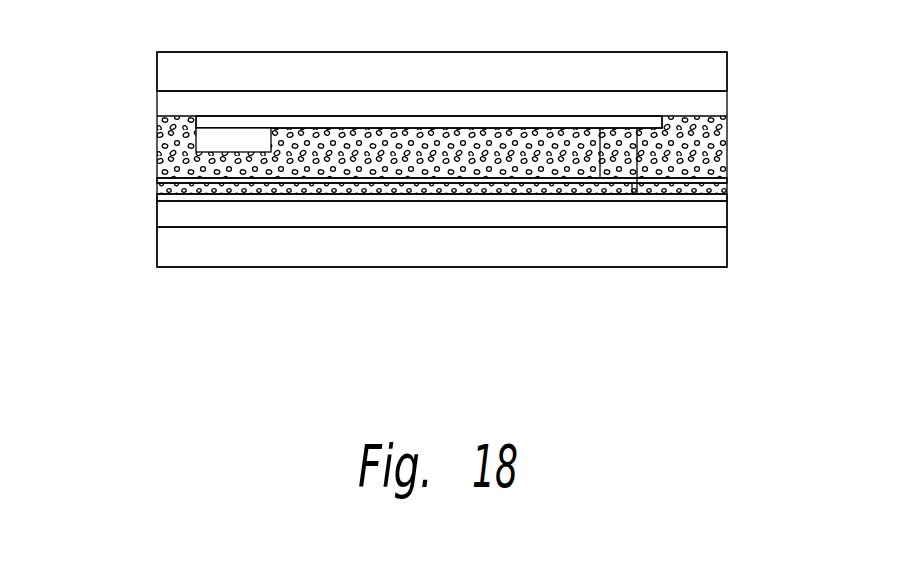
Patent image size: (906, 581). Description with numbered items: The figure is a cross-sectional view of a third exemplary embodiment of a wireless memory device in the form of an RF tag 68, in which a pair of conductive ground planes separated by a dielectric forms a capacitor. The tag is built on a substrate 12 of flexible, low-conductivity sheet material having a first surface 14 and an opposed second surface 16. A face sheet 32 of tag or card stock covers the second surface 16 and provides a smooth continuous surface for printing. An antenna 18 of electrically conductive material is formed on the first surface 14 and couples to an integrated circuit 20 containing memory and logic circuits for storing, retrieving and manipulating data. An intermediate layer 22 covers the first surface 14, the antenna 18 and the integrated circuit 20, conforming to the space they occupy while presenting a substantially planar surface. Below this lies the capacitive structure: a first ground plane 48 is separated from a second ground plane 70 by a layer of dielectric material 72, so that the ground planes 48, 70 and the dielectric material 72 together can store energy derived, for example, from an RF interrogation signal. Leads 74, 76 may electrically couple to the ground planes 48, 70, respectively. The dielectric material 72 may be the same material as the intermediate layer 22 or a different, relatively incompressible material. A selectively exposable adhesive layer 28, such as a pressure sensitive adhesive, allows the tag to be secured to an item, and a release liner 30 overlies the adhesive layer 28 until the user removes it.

The RF tag 68 is at (140, 74).
The face sheet 32 is at (728, 62).
The second surface 16 is at (707, 78).
The substrate 12 is at (728, 105).
The first surface 14 is at (703, 117).
The antenna 18 is at (670, 120).
The integrated circuit 20 is at (190, 149).
The intermediate layer 22 is at (728, 165).
The first ground plane 48 is at (157, 183).
The dielectric material 72 is at (157, 190).
The second ground plane 70 is at (157, 202).
The adhesive layer 28 is at (728, 210).
The release liner 30 is at (728, 243).
The lead 74 is at (600, 170).
The lead 76 is at (640, 188).